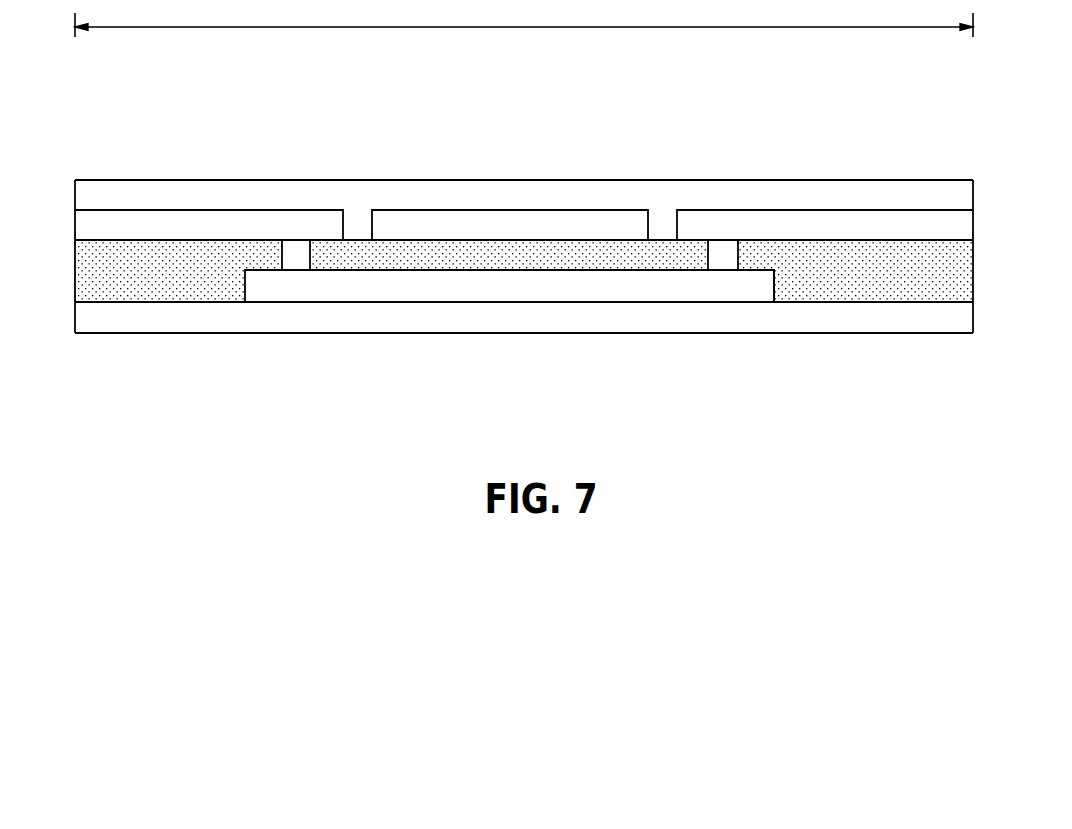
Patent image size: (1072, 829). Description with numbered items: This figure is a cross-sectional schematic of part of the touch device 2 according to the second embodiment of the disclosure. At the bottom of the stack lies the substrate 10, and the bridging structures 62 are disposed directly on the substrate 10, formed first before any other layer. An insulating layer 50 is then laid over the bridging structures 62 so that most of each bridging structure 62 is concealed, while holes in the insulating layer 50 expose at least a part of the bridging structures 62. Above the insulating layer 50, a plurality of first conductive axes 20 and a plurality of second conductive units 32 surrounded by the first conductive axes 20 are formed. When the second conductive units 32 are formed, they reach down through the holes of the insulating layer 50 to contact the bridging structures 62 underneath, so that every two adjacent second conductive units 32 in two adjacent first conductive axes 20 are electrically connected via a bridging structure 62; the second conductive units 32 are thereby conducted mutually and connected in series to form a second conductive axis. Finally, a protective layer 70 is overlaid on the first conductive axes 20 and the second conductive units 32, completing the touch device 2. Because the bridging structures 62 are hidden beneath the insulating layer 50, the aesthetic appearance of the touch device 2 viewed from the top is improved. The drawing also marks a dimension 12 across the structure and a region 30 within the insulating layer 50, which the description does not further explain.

The touch device 2 is at (995, 160).
The substrate 10 is at (500, 330).
The device width 12 is at (524, 18).
The first conductive axes 20 is at (500, 237).
The dielectric layer 30 is at (500, 268).
The second conductive units 32 is at (183, 238).
The insulating layer 50 is at (150, 278).
The bridging structures 62 is at (500, 298).
The protective layer 70 is at (500, 207).